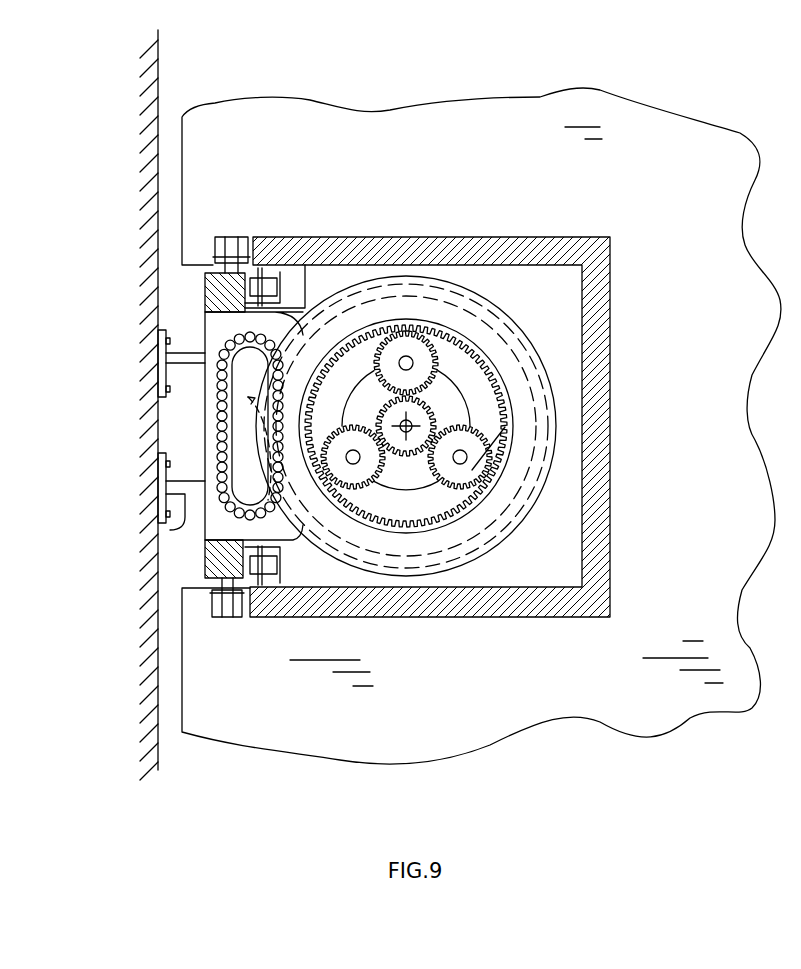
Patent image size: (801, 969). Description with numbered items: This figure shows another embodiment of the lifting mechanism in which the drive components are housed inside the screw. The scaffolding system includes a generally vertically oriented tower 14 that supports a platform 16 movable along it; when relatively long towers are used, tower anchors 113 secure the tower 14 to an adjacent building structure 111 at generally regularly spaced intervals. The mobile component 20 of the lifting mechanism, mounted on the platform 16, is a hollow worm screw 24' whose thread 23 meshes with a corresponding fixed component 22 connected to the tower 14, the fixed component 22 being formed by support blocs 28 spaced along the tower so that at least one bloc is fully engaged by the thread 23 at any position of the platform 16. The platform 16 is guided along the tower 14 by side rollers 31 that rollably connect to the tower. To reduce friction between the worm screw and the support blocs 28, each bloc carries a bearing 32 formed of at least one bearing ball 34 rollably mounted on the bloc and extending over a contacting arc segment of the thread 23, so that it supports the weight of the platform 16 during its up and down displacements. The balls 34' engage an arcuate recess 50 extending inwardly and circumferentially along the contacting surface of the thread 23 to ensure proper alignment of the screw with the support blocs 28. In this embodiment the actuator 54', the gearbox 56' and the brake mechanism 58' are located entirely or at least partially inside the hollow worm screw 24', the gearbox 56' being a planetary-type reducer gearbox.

The building structure 111 is at (160, 60).
The platform 16 is at (659, 279).
The support bloc 28 is at (226, 328).
The tower 14 is at (204, 558).
The side rollers 31 is at (293, 580).
The fixed component 22 is at (291, 300).
The bearing ball 34 is at (180, 426).
The balls 34' is at (244, 434).
The bearing 32 is at (214, 384).
The tower anchors 113 is at (167, 530).
The mobile component 20 is at (389, 277).
The thread 23 is at (555, 432).
The hollow worm screw 24' is at (406, 376).
The arcuate recess 50 is at (515, 497).
The actuator 54' is at (445, 387).
The brake mechanism 58' is at (505, 413).
The gearbox 56' is at (388, 501).